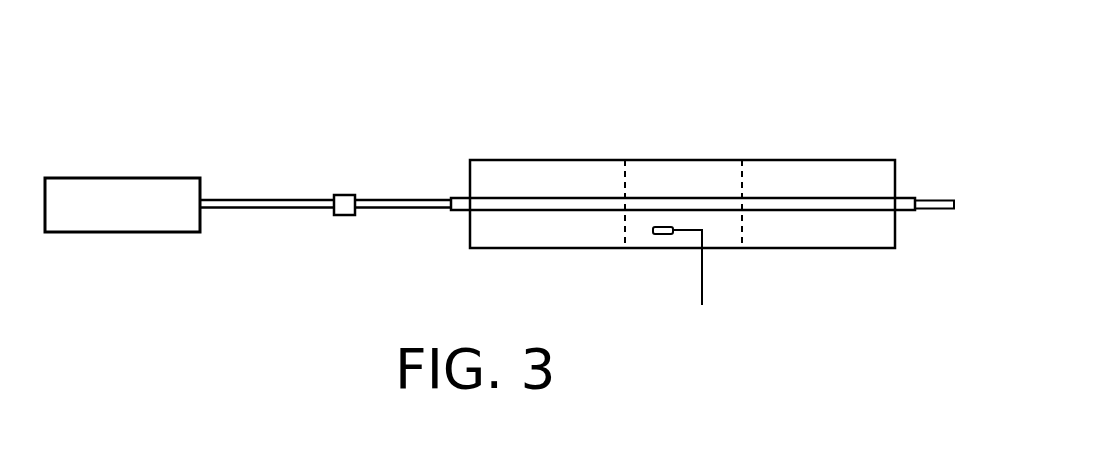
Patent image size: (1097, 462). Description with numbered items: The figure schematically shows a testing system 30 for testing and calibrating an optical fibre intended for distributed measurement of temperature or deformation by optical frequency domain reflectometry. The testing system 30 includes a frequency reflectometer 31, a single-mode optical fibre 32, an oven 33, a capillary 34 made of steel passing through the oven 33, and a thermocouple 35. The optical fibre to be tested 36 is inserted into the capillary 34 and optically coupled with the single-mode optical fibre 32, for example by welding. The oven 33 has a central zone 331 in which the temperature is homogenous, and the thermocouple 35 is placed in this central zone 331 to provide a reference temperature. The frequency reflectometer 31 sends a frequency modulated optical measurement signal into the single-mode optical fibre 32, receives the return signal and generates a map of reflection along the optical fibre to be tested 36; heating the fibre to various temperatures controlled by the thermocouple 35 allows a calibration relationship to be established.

The testing system 30 is at (168, 83).
The frequency reflectometer 31 is at (112, 232).
The single-mode optical fibre 32 is at (250, 210).
The oven 33 is at (827, 160).
The central zone 331 is at (678, 178).
The capillary 34 is at (462, 212).
The thermocouple 35 is at (665, 234).
The optical fibre to be tested 36 is at (380, 212).